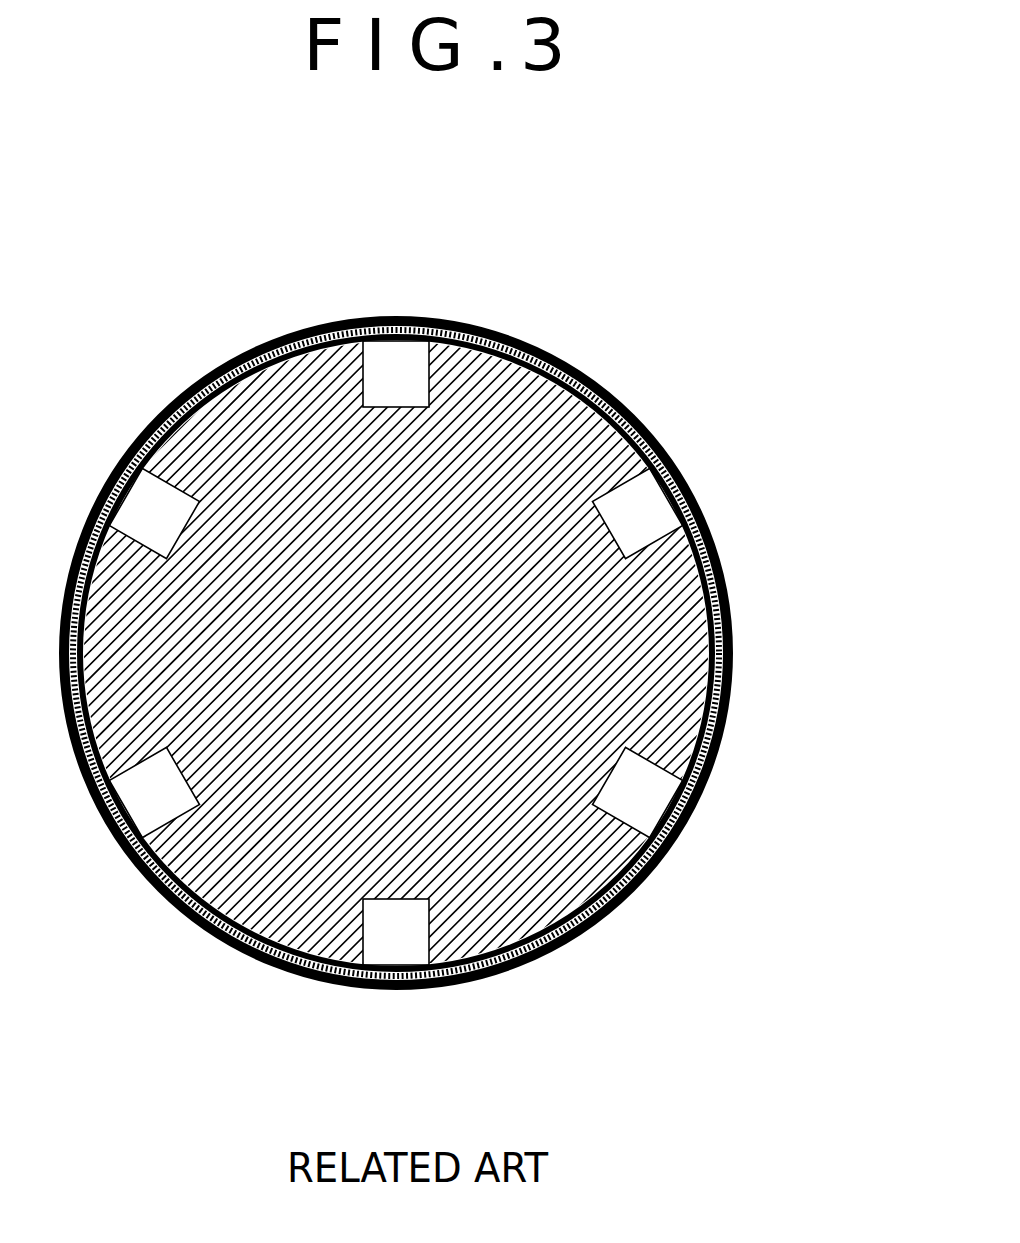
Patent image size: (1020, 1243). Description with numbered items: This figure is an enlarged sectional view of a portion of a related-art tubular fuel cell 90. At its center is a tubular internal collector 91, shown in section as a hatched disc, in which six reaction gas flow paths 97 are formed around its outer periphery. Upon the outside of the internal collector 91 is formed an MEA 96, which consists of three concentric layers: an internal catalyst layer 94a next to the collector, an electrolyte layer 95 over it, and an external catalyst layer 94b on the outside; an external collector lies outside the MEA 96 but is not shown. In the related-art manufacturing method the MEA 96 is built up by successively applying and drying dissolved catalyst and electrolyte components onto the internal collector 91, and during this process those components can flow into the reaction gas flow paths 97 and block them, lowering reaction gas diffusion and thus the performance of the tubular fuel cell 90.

The tubular fuel cell 90 is at (423, 243).
The internal collector 91 is at (633, 886).
The internal catalyst layer 94a is at (830, 592).
The external catalyst layer 94b is at (733, 617).
The electrolyte layer 95 is at (733, 649).
The MEA 96 is at (478, 653).
The reaction gas flow paths 97 is at (662, 508).